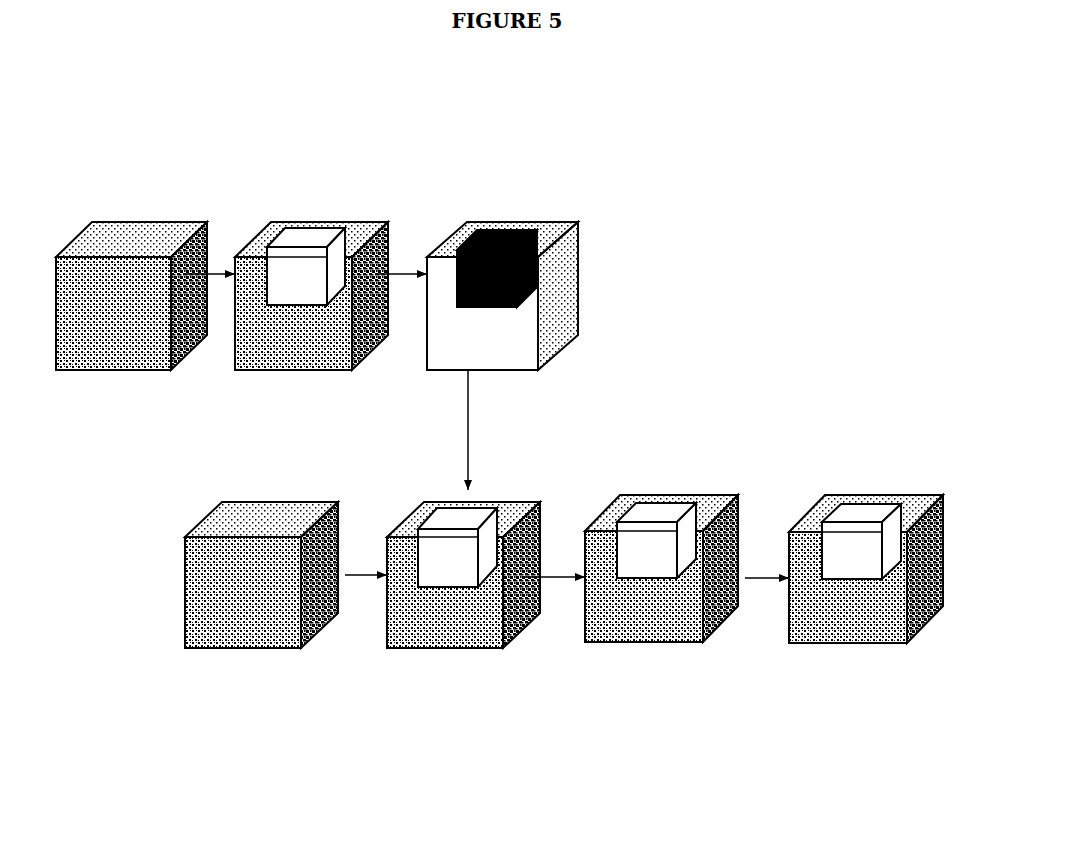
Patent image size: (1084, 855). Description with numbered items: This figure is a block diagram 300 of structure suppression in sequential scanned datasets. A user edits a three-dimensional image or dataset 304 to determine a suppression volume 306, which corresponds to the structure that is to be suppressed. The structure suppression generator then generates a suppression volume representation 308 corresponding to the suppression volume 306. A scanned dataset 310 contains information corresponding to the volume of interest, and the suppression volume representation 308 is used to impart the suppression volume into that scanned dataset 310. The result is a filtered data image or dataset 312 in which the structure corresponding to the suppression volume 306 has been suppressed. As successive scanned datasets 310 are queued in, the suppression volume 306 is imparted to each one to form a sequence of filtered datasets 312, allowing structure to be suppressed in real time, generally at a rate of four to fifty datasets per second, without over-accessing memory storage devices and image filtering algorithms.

The block diagram 300 is at (721, 207).
The 3D image or dataset 304 is at (265, 232).
The suppression volume 306 is at (305, 240).
The suppression volume representation 308 is at (527, 220).
The scanned dataset 310 is at (247, 528).
The filtered data image or dataset 312 is at (788, 640).